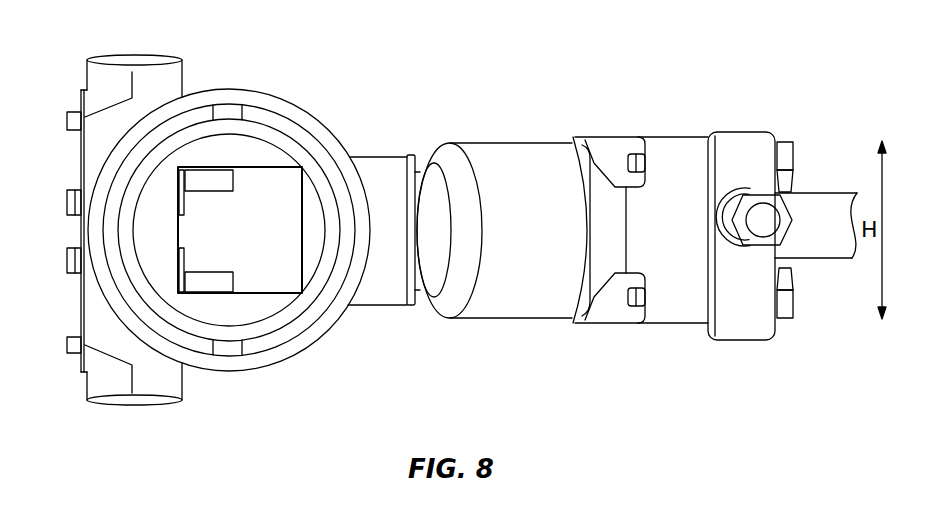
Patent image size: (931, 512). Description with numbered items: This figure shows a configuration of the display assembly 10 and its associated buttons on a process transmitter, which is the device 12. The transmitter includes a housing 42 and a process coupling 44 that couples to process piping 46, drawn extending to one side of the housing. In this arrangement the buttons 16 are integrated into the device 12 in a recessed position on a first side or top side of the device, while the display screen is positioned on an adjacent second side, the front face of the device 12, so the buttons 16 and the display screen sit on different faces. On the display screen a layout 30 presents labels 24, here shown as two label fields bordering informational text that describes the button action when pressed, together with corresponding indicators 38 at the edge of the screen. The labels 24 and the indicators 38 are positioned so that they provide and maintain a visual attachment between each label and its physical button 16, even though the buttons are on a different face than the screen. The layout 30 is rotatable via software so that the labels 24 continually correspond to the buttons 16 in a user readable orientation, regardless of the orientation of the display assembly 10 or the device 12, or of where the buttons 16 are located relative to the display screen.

The display assembly 10 is at (296, 307).
The device 12 is at (45, 382).
The buttons 16 is at (67, 202).
The labels 24 is at (208, 167).
The layout 30 is at (253, 167).
The indicators 38 is at (179, 204).
The housing 42 is at (198, 385).
The process coupling 44 is at (681, 324).
The process piping 46 is at (818, 194).